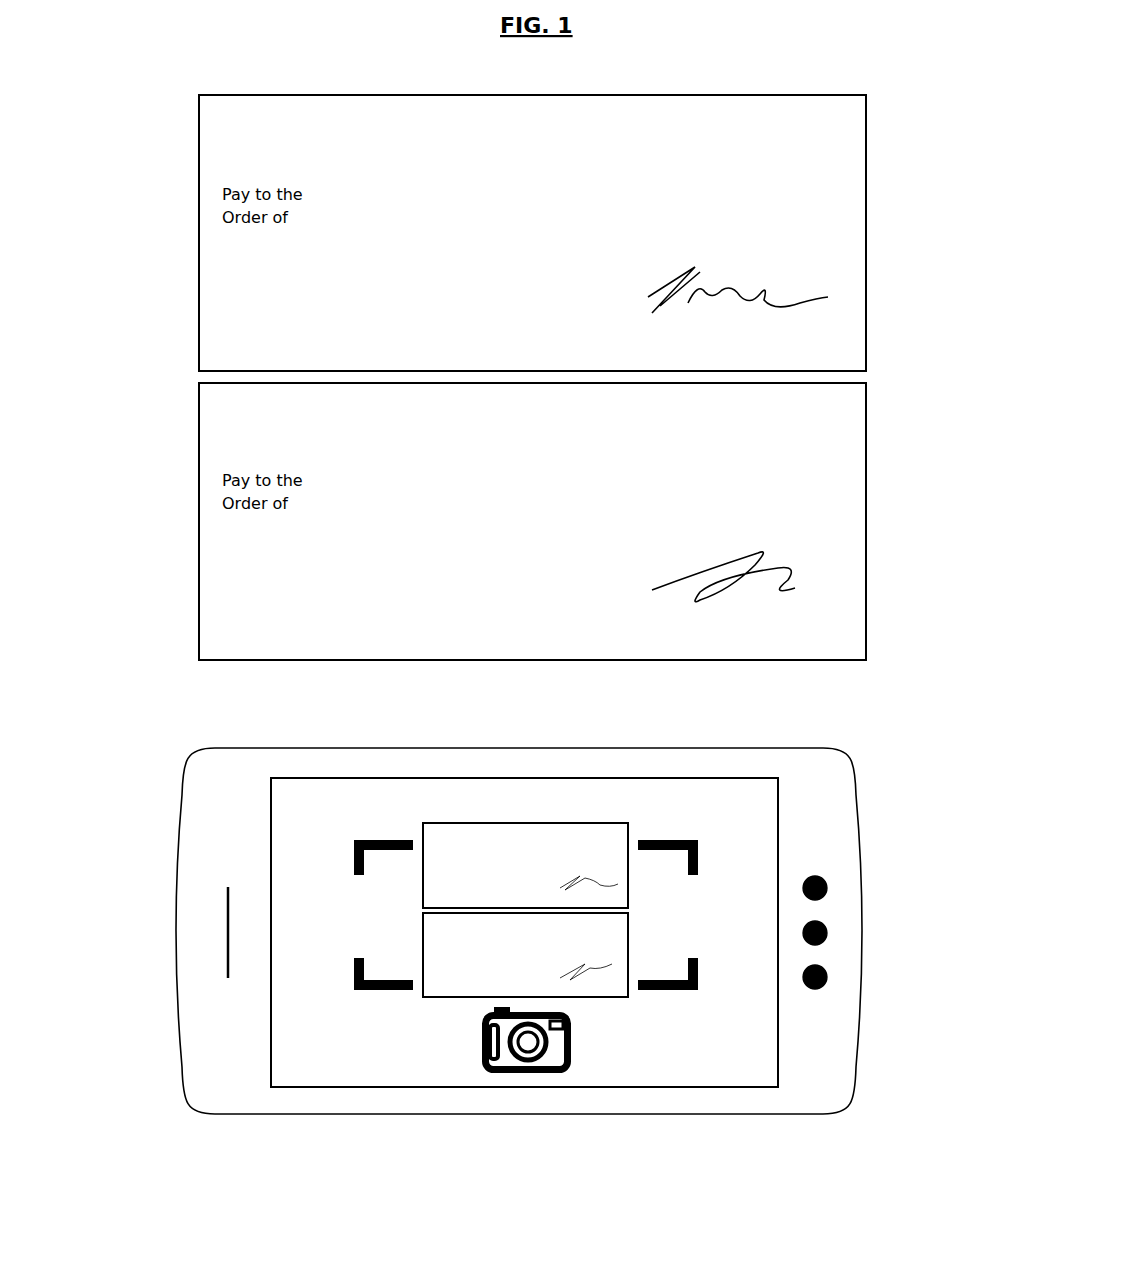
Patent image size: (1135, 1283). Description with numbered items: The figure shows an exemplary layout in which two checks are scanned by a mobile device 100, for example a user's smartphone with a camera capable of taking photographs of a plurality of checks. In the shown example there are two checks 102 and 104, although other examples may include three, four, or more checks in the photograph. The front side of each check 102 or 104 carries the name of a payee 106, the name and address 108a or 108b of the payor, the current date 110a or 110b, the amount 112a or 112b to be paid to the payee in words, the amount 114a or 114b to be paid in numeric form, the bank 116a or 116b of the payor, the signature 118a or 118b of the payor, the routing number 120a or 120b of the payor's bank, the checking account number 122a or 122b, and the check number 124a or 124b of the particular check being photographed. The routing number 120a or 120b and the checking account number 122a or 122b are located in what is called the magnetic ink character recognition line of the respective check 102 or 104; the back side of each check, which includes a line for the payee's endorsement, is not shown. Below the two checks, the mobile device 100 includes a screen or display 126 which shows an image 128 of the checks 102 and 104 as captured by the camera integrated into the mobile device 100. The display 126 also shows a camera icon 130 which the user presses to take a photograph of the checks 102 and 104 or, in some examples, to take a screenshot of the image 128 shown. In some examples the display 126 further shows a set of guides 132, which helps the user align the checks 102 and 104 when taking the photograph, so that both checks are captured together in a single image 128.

The mobile device 100 is at (398, 1114).
The check 102 is at (299, 93).
The check 104 is at (199, 488).
The name of a payee 106 is at (467, 175).
The name and address of the payor 108a is at (214, 145).
The name and address of the payor 108b is at (241, 394).
The current date 110a is at (805, 137).
The current date 110b is at (807, 423).
The amount in words 112a is at (315, 243).
The amount in words 112b is at (753, 532).
The amount in numeric form 114a is at (819, 201).
The amount in numeric form 114b is at (819, 493).
The bank of the payor 116a is at (206, 307).
The bank of the payor 116b is at (201, 582).
The signature of the payor 118a is at (796, 287).
The signature of the payor 118b is at (808, 580).
The routing number 120a is at (307, 347).
The routing number 120b is at (303, 633).
The checking account number 122a is at (551, 366).
The checking account number 122b is at (468, 633).
The check number 124a is at (734, 332).
The check number 124b is at (719, 633).
The display 126 is at (305, 1087).
The image 128 is at (537, 798).
The camera icon 130 is at (530, 1073).
The guides 132 is at (698, 870).